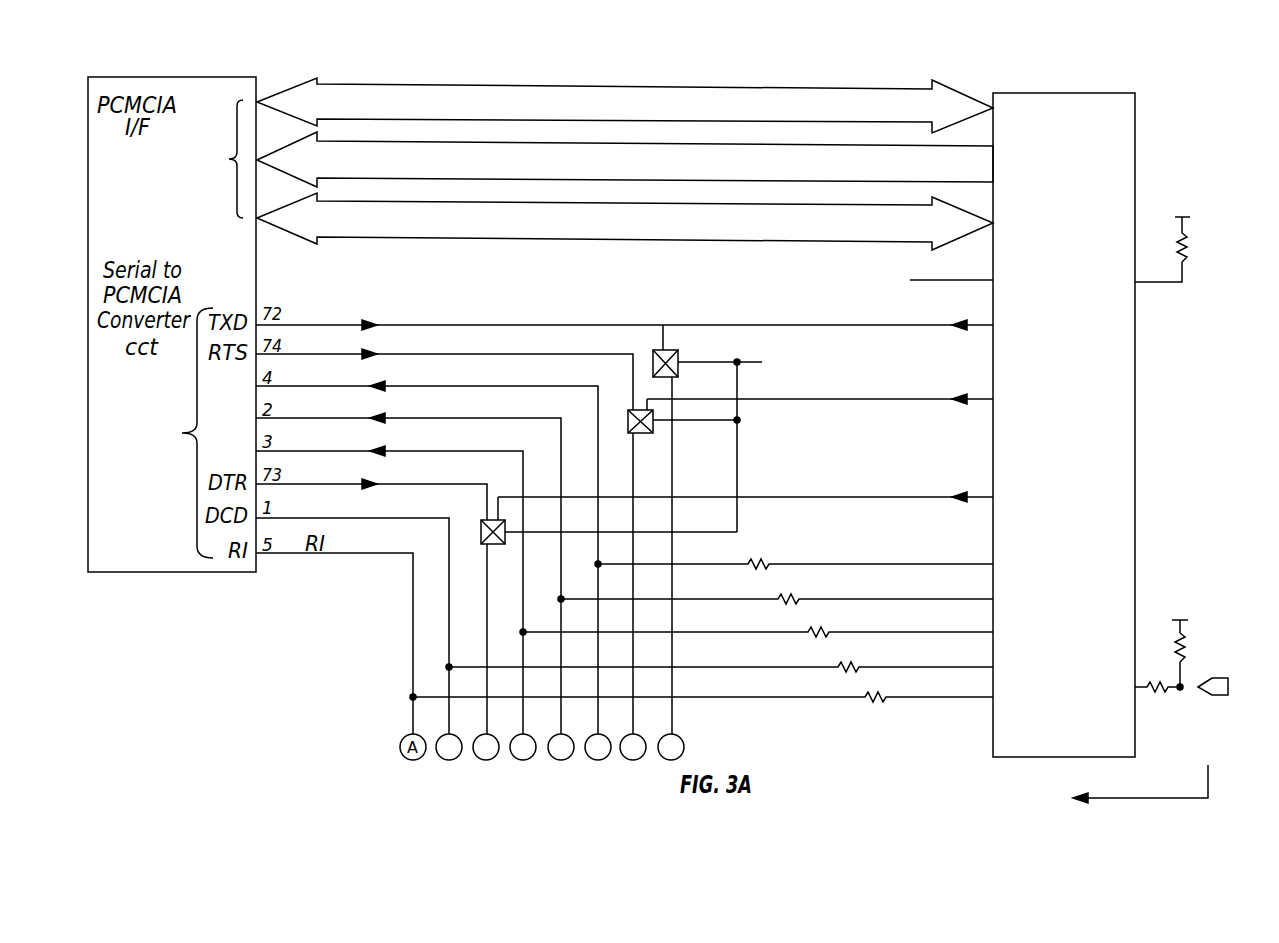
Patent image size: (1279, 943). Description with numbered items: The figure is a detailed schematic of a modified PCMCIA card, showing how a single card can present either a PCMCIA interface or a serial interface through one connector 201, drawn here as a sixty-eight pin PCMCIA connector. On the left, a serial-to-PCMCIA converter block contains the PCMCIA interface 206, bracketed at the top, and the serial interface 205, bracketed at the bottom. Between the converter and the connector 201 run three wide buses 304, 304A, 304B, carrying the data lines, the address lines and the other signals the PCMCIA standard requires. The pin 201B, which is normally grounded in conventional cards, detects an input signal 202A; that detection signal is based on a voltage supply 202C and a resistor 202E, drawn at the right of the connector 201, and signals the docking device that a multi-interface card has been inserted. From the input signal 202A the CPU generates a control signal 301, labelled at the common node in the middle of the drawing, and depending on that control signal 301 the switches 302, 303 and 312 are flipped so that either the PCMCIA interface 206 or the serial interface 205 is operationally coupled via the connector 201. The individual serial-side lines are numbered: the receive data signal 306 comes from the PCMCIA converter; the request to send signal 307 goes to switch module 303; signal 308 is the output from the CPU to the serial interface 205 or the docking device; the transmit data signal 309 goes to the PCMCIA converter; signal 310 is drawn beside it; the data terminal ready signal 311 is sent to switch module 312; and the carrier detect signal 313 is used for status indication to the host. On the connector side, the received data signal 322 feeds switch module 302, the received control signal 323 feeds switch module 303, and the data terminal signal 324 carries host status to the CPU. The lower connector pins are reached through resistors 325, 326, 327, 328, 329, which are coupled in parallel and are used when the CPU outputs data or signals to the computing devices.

The connector 201 is at (1095, 758).
The pin 201B is at (925, 281).
The input signal 202A is at (1129, 742).
The voltage supply 202C is at (1190, 215).
The resistor 202E is at (1190, 249).
The serial interface 205 is at (156, 433).
The PCMCIA interface 206 is at (215, 159).
The control signal 301 is at (680, 441).
The switch 302 is at (677, 378).
The switch 303 is at (650, 436).
The data bus 0-7 304 is at (693, 86).
The address bus 304A is at (693, 145).
The other PCMCIA required signals bus 304B is at (431, 241).
The signal 306 is at (354, 323).
The signal 307 is at (354, 355).
The signal 308 is at (354, 388).
The signal 309 is at (354, 419).
The DSR signal line 310 is at (354, 451).
The signal 311 is at (354, 484).
The switch module 312 is at (480, 536).
The signal 313 is at (354, 517).
The signal 322 is at (900, 326).
The signal 323 is at (900, 398).
The signal 324 is at (900, 496).
The resistor 325 is at (756, 561).
The resistor 326 is at (786, 596).
The resistor 327 is at (811, 629).
The resistor 328 is at (840, 663).
The resistor 329 is at (872, 704).